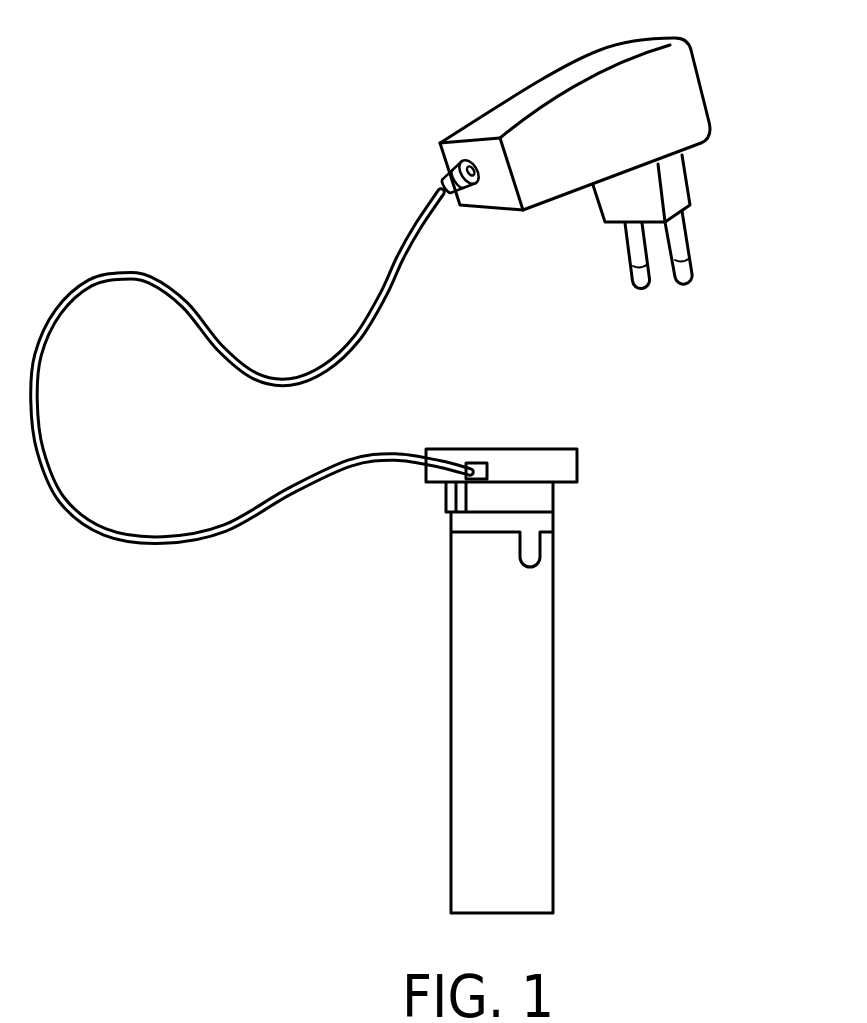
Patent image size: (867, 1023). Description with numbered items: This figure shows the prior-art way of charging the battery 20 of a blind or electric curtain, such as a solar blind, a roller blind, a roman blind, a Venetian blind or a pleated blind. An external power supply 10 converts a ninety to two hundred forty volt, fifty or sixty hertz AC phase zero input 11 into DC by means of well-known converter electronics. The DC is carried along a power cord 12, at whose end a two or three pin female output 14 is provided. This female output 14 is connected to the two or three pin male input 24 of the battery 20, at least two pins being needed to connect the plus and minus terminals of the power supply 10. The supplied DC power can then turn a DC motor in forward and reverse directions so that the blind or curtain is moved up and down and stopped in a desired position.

The power adapter 10 is at (662, 100).
The mains plug 11 is at (677, 182).
The cable 12 is at (35, 412).
The cap 14 is at (563, 460).
The device body 20 is at (538, 688).
The connector 24 is at (487, 470).